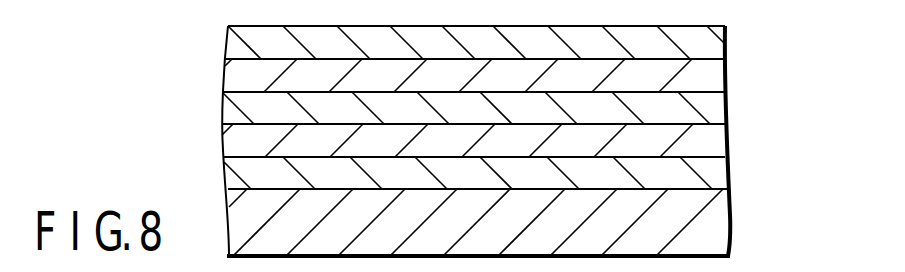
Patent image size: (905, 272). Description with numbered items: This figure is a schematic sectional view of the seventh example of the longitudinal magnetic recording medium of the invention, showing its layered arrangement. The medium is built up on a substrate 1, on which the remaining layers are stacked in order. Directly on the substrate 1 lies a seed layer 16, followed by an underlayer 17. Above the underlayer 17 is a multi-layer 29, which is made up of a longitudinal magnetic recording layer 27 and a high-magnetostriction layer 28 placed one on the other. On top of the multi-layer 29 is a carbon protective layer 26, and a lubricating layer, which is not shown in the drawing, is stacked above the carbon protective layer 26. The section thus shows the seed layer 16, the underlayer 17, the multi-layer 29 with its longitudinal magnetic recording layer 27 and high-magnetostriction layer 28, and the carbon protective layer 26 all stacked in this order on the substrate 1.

The substrate 1 is at (712, 224).
The seed layer 16 is at (712, 175).
The underlayer 17 is at (712, 143).
The carbon protective layer 26 is at (712, 45).
The longitudinal magnetic recording layer 27 is at (503, 108).
The high-magnetostriction layer 28 is at (712, 76).
The multi-layer 29 is at (534, 90).